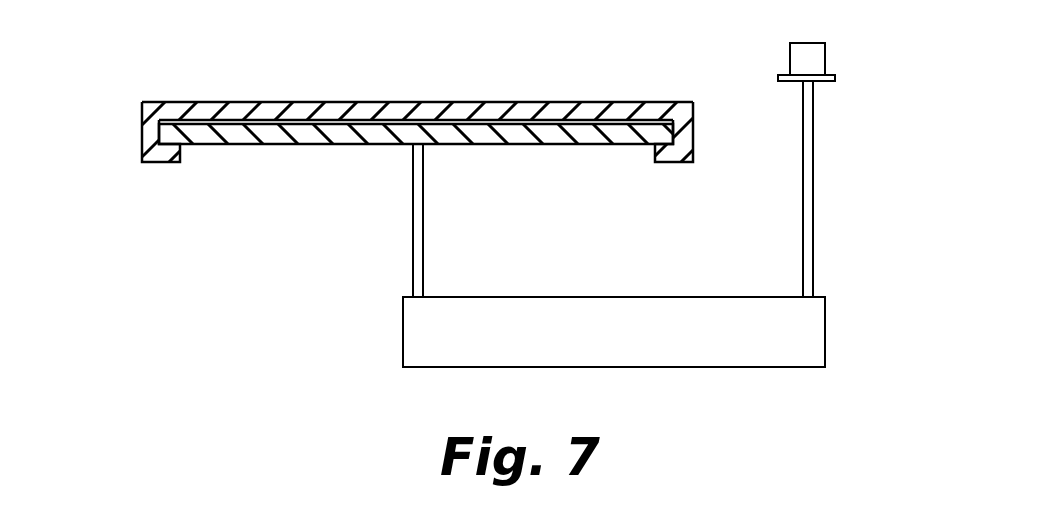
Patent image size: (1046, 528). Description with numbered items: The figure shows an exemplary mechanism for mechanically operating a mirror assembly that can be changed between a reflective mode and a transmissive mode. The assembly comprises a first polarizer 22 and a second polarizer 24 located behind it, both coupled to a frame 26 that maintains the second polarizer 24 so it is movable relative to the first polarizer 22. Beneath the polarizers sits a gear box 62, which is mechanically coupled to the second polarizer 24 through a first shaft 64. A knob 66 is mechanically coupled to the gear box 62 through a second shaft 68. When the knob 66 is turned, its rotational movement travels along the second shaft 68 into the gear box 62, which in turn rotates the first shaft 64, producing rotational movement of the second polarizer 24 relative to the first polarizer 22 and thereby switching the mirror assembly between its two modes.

The first polarizer 22 is at (490, 102).
The second polarizer 24 is at (528, 145).
The frame 26 is at (142, 135).
The gear box 62 is at (704, 293).
The first shaft 64 is at (412, 228).
The knob 66 is at (825, 62).
The second shaft 68 is at (813, 187).